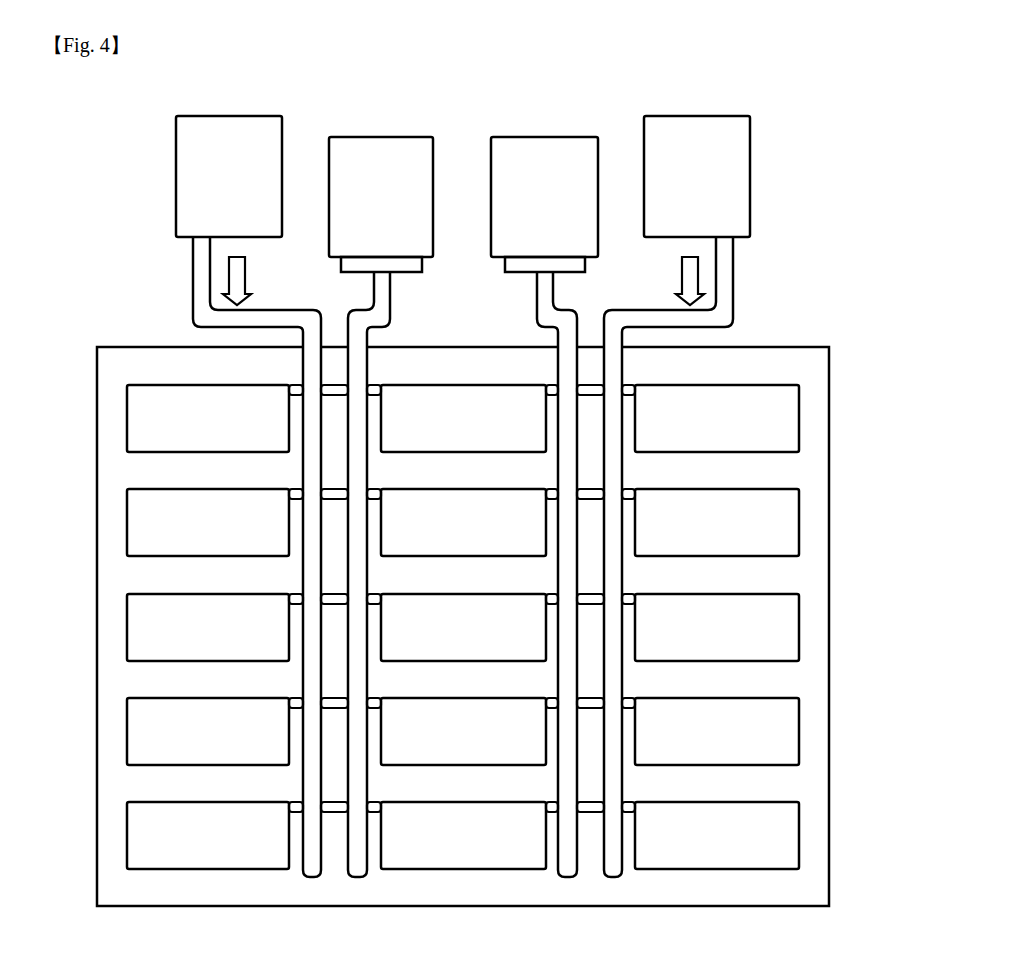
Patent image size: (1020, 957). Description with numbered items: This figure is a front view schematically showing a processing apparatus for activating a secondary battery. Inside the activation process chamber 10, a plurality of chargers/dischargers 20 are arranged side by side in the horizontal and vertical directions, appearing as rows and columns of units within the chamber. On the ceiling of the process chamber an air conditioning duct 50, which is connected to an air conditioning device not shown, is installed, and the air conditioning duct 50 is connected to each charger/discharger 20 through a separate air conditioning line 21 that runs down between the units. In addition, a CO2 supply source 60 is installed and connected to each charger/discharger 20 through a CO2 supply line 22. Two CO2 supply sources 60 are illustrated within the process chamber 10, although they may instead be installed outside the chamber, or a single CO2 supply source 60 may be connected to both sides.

The activation process chamber 10 is at (804, 575).
The charger/discharger 20 is at (783, 418).
The air conditioning line 21 is at (374, 294).
The CO2 supply line 22 is at (193, 298).
The air conditioning duct 50 is at (380, 137).
The CO2 supply source 60 is at (176, 173).